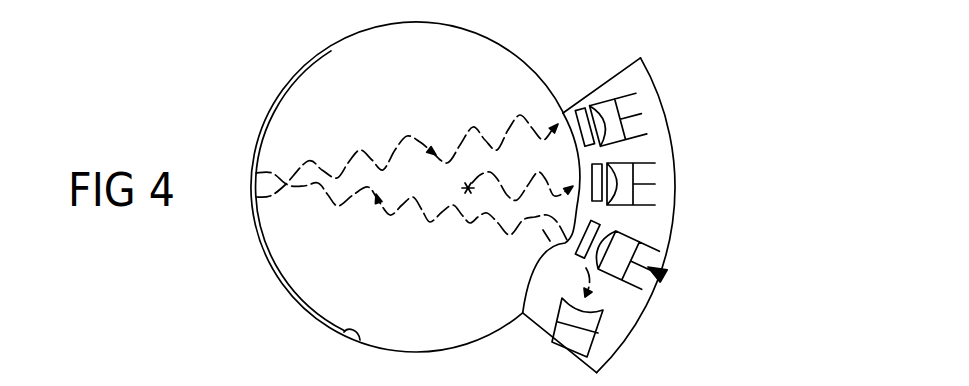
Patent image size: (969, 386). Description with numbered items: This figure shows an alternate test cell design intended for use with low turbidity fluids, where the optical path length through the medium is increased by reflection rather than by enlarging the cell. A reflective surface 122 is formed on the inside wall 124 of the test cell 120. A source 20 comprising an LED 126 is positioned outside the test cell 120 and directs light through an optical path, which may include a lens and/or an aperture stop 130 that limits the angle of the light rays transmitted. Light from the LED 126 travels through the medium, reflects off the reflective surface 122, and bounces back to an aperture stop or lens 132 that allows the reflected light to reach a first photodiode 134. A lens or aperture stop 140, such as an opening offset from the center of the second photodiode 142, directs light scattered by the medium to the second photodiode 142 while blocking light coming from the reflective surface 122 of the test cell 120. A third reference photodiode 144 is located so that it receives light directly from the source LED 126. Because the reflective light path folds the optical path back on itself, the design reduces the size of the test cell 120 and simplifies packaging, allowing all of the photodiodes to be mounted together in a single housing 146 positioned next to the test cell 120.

The test cell 120 is at (228, 118).
The reflective surface 122 is at (268, 262).
The inside wall 124 is at (360, 340).
The aperture stop 130 is at (524, 312).
The single housing 146 is at (676, 210).
The aperture stop or lens 132 is at (565, 114).
The first photodiode 134 is at (603, 106).
The lens or aperture stop 140 is at (586, 184).
The second photodiode 142 is at (655, 185).
The LED 126 is at (660, 233).
The third reference photodiode 144 is at (606, 321).
The source 20 is at (662, 275).